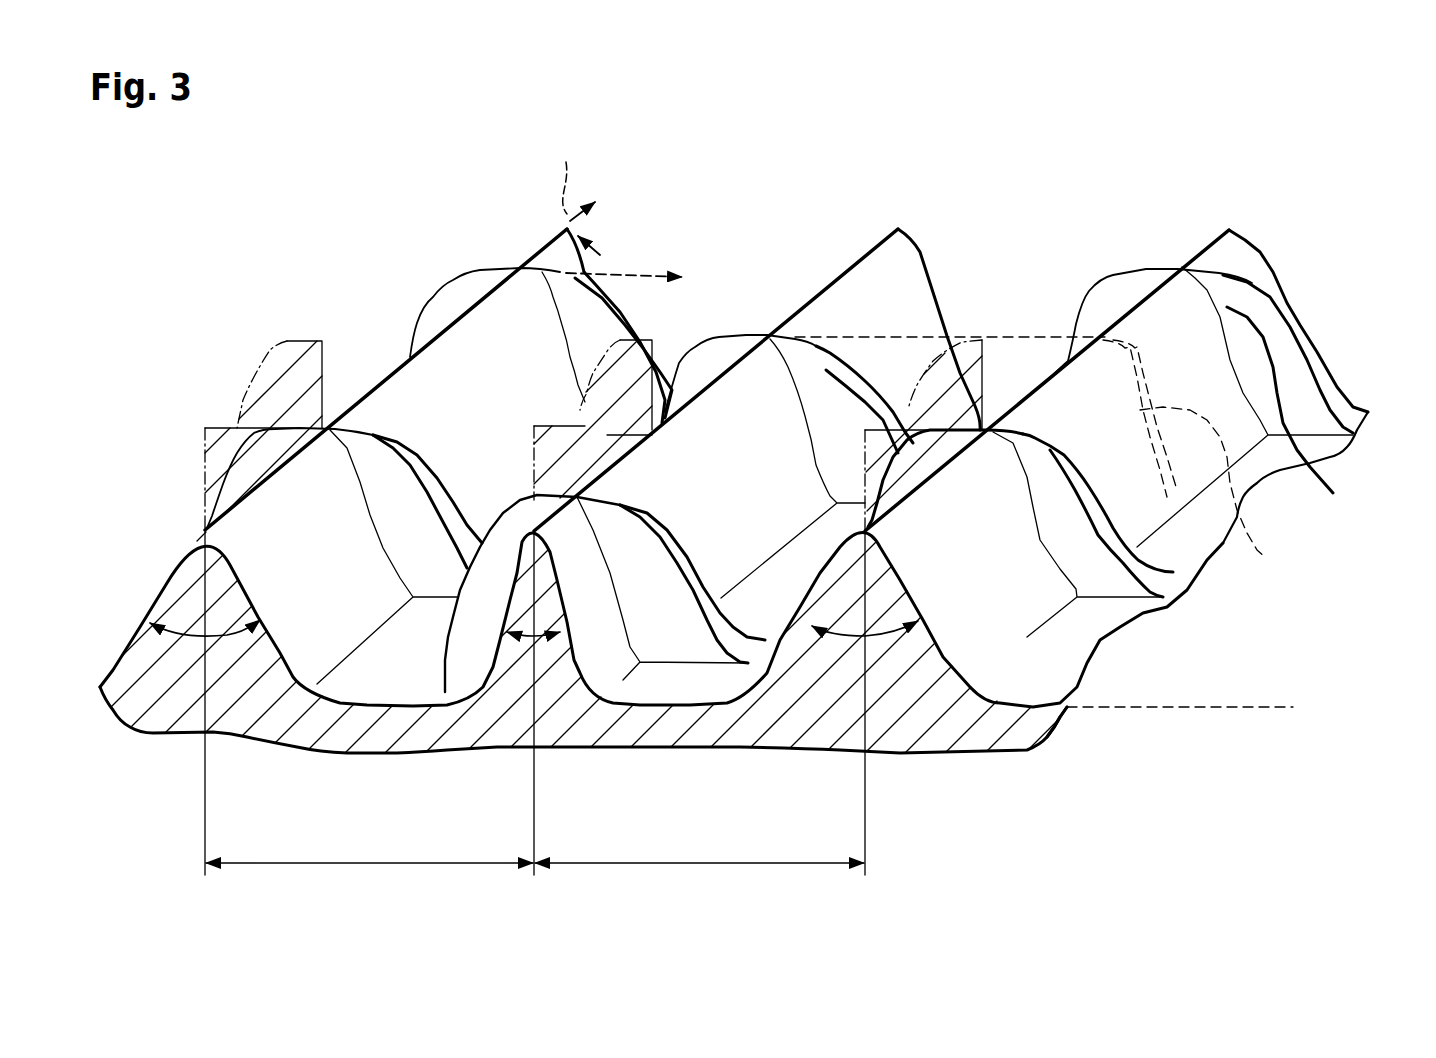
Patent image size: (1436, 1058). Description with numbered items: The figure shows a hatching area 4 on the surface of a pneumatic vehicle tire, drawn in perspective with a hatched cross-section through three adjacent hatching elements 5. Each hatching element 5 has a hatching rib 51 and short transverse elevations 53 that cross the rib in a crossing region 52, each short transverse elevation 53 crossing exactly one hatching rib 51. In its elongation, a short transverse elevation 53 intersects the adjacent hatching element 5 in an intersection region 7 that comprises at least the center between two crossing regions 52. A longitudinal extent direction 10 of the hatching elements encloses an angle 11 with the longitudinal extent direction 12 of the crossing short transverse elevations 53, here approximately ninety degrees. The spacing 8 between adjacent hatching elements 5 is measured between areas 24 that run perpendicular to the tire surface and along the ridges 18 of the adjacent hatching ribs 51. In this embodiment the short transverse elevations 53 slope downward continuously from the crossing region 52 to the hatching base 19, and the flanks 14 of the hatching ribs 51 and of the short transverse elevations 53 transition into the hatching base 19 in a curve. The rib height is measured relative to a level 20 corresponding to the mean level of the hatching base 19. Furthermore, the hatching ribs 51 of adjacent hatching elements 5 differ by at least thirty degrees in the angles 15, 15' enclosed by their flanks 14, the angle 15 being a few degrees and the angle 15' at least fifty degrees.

The hatching area 4 is at (1357, 170).
The hatching element 5 is at (610, 185).
The intersection region 7 is at (1039, 463).
The spacing 8 is at (370, 864).
The longitudinal extent direction 10 is at (571, 175).
The angle 11 is at (585, 243).
The longitudinal extent direction 12 is at (643, 273).
The flank 14 is at (160, 583).
The angle 15 is at (523, 714).
The angle 15' is at (550, 708).
The ridge 18 is at (405, 357).
The hatching base 19 is at (1040, 673).
The level 20 is at (1245, 708).
The area 24 is at (254, 414).
The hatching rib 51 is at (547, 257).
The crossing region 52 is at (518, 265).
The short transverse elevation 53 is at (460, 292).